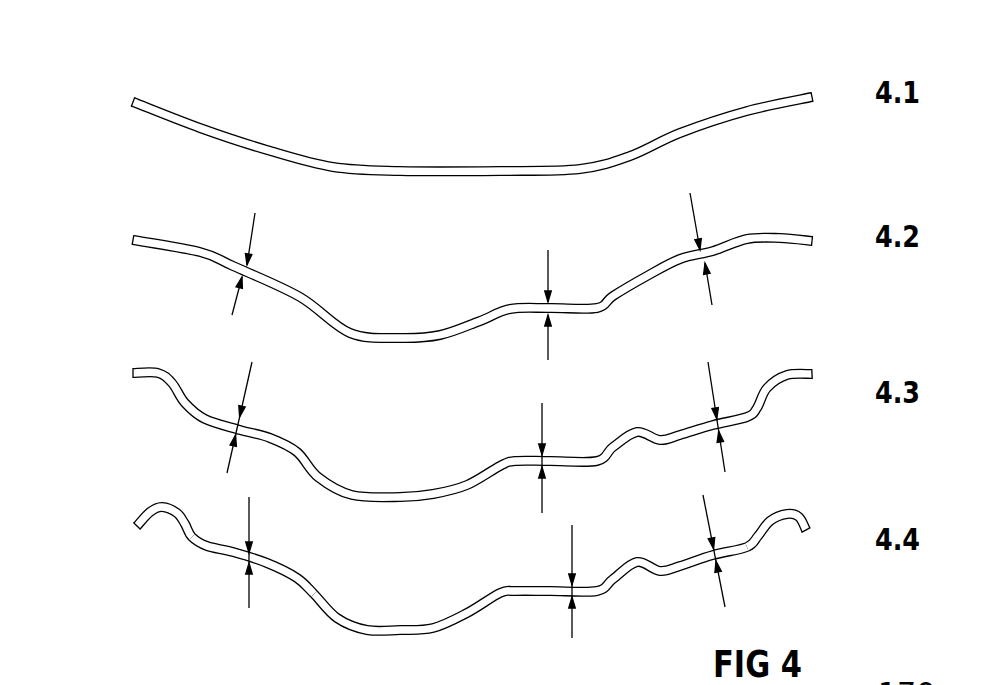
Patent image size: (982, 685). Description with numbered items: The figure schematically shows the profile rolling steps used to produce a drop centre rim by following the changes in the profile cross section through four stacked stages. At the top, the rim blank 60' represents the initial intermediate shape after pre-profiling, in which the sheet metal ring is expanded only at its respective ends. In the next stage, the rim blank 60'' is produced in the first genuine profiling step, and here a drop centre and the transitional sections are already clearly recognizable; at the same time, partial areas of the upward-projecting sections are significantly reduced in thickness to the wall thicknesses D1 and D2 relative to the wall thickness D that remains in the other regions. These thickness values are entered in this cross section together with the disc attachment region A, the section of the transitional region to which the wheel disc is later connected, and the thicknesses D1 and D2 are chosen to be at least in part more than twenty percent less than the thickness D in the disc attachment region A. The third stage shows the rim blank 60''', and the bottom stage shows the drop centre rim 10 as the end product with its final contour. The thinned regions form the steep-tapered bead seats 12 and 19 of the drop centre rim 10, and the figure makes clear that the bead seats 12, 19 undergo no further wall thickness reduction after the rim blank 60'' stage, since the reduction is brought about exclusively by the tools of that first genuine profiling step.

The rim blank 60' is at (472, 92).
The rim blank 60'' is at (433, 228).
The rim blank 60''' is at (431, 435).
The drop centre rim 10 is at (162, 573).
The steep-tapered bead seat 19 is at (225, 572).
The steep-tapered bead seat 12 is at (739, 530).
The wall thickness D is at (553, 444).
The wall thickness D1 is at (689, 400).
The wall thickness D2 is at (243, 408).
The disc attachment region A is at (533, 573).